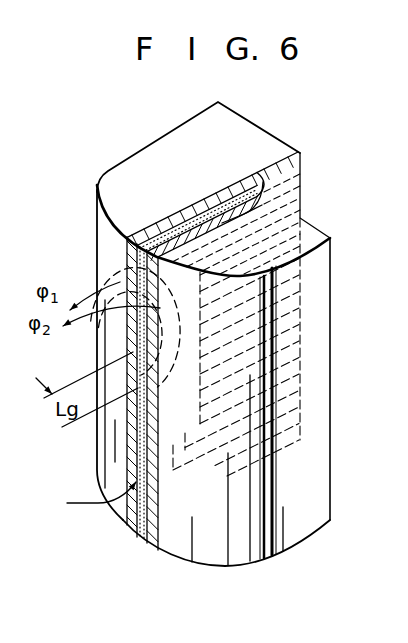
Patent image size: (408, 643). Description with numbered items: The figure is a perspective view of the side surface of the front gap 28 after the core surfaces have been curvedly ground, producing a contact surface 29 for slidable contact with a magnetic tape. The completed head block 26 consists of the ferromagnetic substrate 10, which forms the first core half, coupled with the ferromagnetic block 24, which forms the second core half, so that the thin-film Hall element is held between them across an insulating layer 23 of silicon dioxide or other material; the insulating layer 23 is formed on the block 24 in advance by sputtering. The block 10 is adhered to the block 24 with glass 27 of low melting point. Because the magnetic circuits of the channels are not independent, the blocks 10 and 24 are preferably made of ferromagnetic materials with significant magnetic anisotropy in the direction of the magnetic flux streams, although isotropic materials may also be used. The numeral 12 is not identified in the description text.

The ferromagnetic substrate 10 is at (131, 160).
The laminated core strip 12 is at (184, 202).
The insulating layer 23 is at (285, 208).
The ferromagnetic block 24 is at (318, 507).
The head block 26 is at (369, 307).
The glass 27 is at (268, 172).
The front gap 28 is at (92, 394).
The contact surface 29 is at (217, 530).